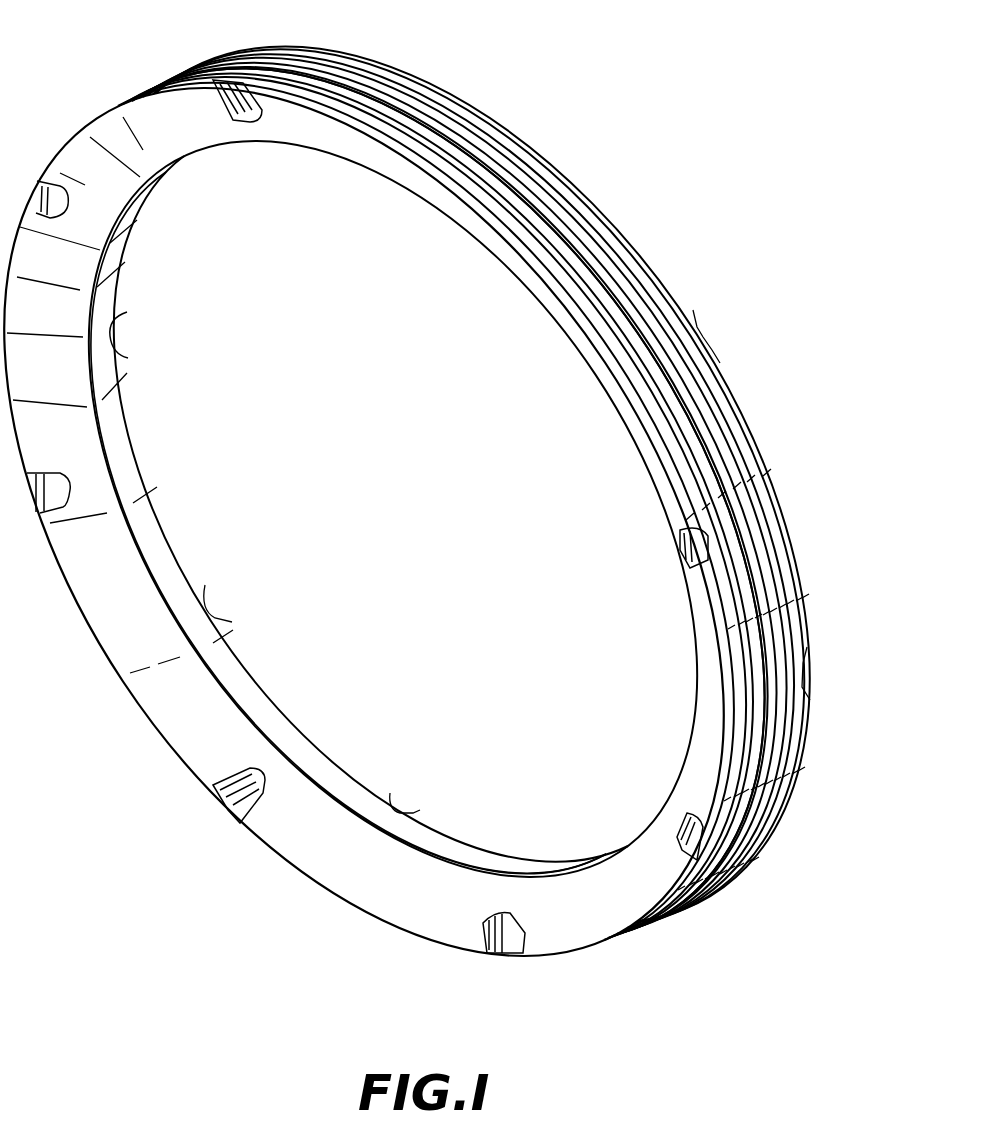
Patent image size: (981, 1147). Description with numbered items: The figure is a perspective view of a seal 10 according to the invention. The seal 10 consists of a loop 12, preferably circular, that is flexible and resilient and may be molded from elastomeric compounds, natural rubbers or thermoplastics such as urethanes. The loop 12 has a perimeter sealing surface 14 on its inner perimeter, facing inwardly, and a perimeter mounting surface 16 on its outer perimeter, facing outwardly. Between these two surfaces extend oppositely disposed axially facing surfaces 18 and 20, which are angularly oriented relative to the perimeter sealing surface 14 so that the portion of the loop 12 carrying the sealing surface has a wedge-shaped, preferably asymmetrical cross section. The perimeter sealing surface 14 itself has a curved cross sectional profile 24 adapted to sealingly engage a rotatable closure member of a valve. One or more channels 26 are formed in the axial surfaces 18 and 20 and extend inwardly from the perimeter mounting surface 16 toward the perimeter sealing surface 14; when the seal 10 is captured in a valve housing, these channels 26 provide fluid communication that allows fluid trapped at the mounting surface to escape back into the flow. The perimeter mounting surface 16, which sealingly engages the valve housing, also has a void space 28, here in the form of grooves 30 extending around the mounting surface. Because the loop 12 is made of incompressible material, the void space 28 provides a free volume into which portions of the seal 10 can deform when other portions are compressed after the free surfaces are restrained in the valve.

The seal 10 is at (436, 542).
The loop 12 is at (760, 444).
The perimeter sealing surface 14 is at (233, 697).
The perimeter mounting surface 16 is at (583, 190).
The axially facing surface 18 is at (153, 707).
The axially facing surface 20 is at (300, 737).
The curved cross sectional profile 24 is at (457, 860).
The channels 26 is at (703, 340).
The void space 28 is at (495, 155).
The grooves 30 is at (730, 378).